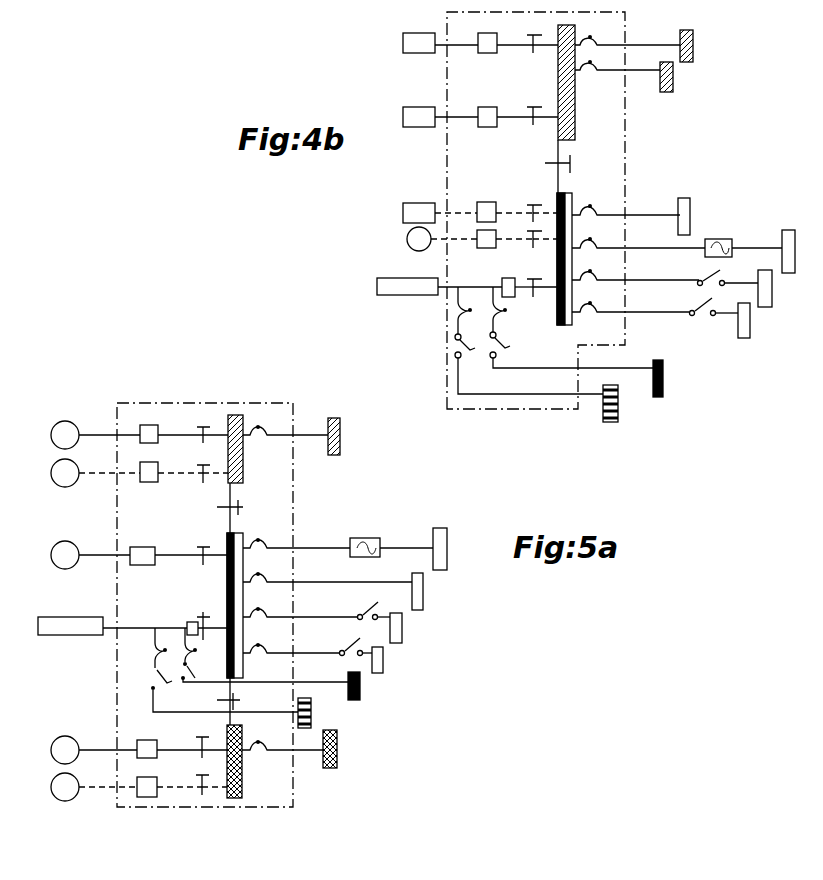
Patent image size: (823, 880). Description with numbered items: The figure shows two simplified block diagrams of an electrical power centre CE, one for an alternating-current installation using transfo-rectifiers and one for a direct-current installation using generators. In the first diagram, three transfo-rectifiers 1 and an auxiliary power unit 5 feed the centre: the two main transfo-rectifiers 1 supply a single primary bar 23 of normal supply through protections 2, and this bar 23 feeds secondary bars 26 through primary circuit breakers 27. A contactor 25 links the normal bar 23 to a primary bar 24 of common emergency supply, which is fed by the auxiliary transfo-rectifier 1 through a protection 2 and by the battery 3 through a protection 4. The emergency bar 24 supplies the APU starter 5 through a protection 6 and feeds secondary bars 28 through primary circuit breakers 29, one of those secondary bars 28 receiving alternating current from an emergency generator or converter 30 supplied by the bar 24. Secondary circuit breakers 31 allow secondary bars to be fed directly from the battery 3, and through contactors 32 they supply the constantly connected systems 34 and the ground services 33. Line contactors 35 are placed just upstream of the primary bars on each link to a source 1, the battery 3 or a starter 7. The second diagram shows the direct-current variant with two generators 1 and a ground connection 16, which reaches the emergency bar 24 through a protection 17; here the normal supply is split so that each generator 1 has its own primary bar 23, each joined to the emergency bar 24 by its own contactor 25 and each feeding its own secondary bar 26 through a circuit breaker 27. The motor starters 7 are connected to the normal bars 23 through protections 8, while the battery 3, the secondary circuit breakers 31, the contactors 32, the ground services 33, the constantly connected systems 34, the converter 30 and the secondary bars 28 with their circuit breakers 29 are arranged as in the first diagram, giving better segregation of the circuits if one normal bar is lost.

In FIG. 4B, the transfo-rectifier / D.C. generator 1 is at (440, 128).
In FIG. 5A, the transfo-rectifier / D.C. generator 1 is at (95, 592).
In FIG. 4B, the protection 2 is at (504, 30).
In FIG. 5A, the protection 2 is at (158, 430).
In FIG. 4B, the battery 3 is at (398, 278).
In FIG. 5A, the battery 3 is at (72, 617).
In FIG. 4B, the protection 4 is at (510, 278).
In FIG. 5A, the protection 4 is at (187, 626).
In FIG. 4B, the auxiliary power unit APU 5 is at (442, 239).
In FIG. 4B, the protection 6 is at (496, 234).
In FIG. 5A, the starter 7 is at (95, 630).
In FIG. 5A, the protection 8 is at (158, 466).
In FIG. 5A, the ground connection 16 is at (90, 555).
In FIG. 5A, the protection 17 is at (150, 547).
In FIG. 4B, the primary bar of normal supply 23 is at (576, 104).
In FIG. 5A, the primary bar of normal supply 23 is at (243, 468).
In FIG. 4B, the primary bar of common emergency supply 24 is at (572, 265).
In FIG. 5A, the primary bar of common emergency supply 24 is at (243, 600).
In FIG. 4B, the contactor 25 is at (550, 160).
In FIG. 5A, the contactor 25 is at (243, 507).
In FIG. 4B, the secondary bar 26 is at (693, 45).
In FIG. 5A, the secondary bar 26 is at (343, 762).
In FIG. 4B, the primary circuit breaker 27 is at (598, 38).
In FIG. 5A, the primary circuit breaker 27 is at (266, 427).
In FIG. 4B, the secondary bar 28 is at (690, 215).
In FIG. 5A, the secondary bar 28 is at (447, 553).
In FIG. 4B, the primary circuit breaker 29 is at (592, 222).
In FIG. 5A, the primary circuit breaker 29 is at (260, 620).
In FIG. 4B, the emergency A.C. generator (converter) 30 is at (722, 239).
In FIG. 5A, the emergency A.C. generator (converter) 30 is at (366, 538).
In FIG. 4B, the secondary circuit breaker 31 is at (496, 310).
In FIG. 5A, the secondary circuit breaker 31 is at (150, 655).
In FIG. 4B, the contactor 32 is at (508, 348).
In FIG. 5A, the contactor 32 is at (249, 687).
In FIG. 4B, the ground services 33 is at (618, 417).
In FIG. 5A, the ground services 33 is at (311, 720).
In FIG. 4B, the constantly connected systems 34 is at (663, 378).
In FIG. 5A, the constantly connected systems 34 is at (360, 695).
In FIG. 4B, the line contactor 35 is at (535, 107).
In FIG. 5A, the line contactor 35 is at (203, 547).
In FIG. 4B, the electrical power centre CE is at (625, 152).
In FIG. 5A, the electrical power centre CE is at (293, 510).